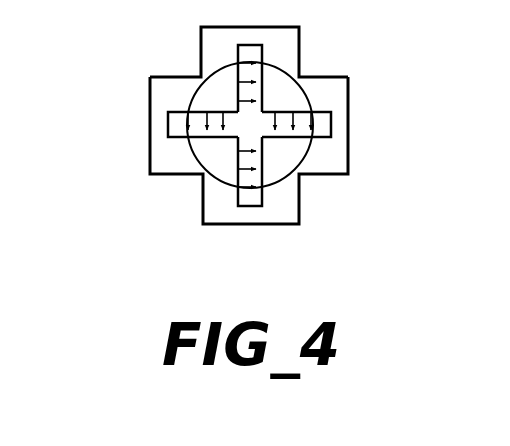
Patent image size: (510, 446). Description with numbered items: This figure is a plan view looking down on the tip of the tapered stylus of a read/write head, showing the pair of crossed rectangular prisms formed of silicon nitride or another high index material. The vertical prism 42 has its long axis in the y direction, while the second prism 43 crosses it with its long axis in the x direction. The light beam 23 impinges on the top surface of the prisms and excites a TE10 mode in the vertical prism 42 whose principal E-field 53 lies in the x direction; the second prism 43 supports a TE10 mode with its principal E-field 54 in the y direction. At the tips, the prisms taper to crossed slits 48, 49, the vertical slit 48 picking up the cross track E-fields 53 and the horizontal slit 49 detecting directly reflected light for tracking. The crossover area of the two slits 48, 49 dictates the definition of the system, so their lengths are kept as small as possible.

The vertical prism 42 is at (213, 52).
The second prism 43 is at (170, 163).
The light beam 23 is at (303, 157).
The principal E-field 53 is at (249, 63).
The vertical slit 48 is at (247, 207).
The principal E-field 54 is at (185, 122).
The horizontal slit 49 is at (333, 132).